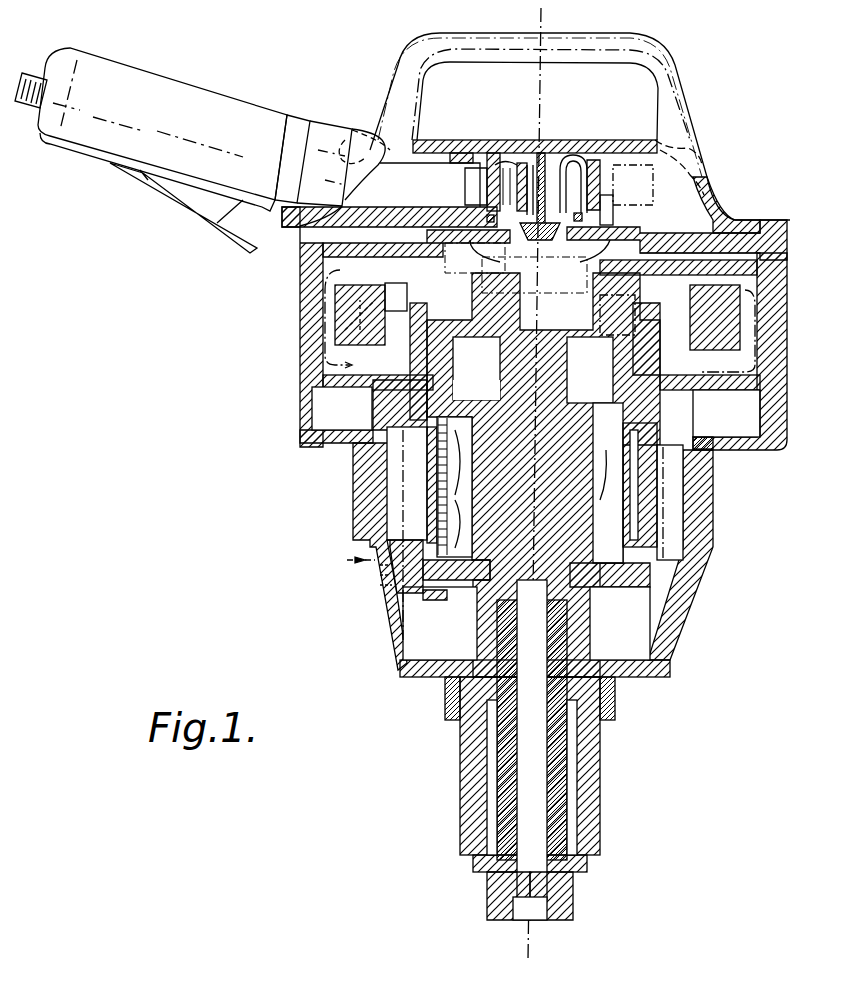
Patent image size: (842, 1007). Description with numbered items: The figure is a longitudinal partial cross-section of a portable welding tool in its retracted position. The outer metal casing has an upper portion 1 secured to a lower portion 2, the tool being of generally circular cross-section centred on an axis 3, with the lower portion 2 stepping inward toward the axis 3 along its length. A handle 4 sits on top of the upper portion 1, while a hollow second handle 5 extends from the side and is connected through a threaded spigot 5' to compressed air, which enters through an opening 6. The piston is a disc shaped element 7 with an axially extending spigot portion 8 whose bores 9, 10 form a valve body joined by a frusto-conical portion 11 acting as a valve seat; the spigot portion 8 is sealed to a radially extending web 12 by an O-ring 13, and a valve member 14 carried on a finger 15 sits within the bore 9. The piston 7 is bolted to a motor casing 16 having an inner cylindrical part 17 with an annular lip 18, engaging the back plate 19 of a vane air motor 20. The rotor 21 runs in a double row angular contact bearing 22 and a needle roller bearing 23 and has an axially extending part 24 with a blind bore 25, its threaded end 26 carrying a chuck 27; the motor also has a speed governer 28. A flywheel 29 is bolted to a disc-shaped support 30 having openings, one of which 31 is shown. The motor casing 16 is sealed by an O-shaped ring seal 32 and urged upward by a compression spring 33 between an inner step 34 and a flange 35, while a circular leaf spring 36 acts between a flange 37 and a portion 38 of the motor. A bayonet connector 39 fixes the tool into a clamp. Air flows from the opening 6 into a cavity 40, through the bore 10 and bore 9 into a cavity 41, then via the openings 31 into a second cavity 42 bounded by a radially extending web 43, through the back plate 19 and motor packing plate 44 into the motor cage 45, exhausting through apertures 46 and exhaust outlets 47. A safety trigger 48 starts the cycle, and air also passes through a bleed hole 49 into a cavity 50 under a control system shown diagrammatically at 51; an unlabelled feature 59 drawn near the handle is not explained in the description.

The upper portion of casing 1 is at (706, 204).
The lower portion of casing 2 is at (772, 438).
The axis 3 is at (532, 718).
The handle 4 is at (672, 80).
The second handle 5 is at (195, 122).
The threaded spigot 5' is at (31, 66).
The opening 6 is at (345, 150).
The disc shaped element 7 is at (375, 236).
The spigot portion 8 is at (577, 152).
The bore 9 is at (590, 228).
The bore 10 is at (548, 170).
The frusto-conical portion 11 is at (498, 168).
The radially extending web 12 is at (400, 183).
The O-ring 13 is at (484, 210).
The valve member 14 is at (523, 290).
The finger 15 is at (540, 168).
The motor casing 16 is at (757, 385).
The inner cylindrical part 17 is at (662, 340).
The annular lip 18 is at (647, 318).
The back plate 19 is at (452, 366).
The vane air motor 20 is at (662, 198).
The rotor 21 is at (420, 495).
The double row angular contact bearing 22 is at (601, 388).
The needle roller bearing 23 is at (482, 812).
The axially extending part 24 is at (555, 762).
The blind bore 25 is at (542, 786).
The end 26 is at (560, 922).
The chuck 27 is at (500, 922).
The speed governer 28 is at (503, 348).
The flywheel 29 is at (362, 333).
The disc-shaped support 30 is at (365, 312).
The opening 31 is at (432, 284).
The O-shaped ring seal 32 is at (705, 446).
The compression spring 33 is at (688, 506).
The inner step 34 is at (672, 600).
The flange 35 is at (692, 434).
The circular leaf spring 36 is at (440, 598).
The flange 37 is at (626, 606).
The portion of the motor 38 is at (462, 632).
The bayonet connector 39 is at (446, 690).
The cavity 40 is at (433, 191).
The cavity 41 is at (475, 268).
The second cavity 42 is at (459, 306).
The radially extending web 43 is at (342, 408).
The motor packing plate 44 is at (468, 398).
The motor cage 45 is at (640, 518).
The apertures 46 is at (450, 452).
The exhaust outlets 47 is at (380, 590).
The safety trigger 48 is at (226, 240).
The bleed hole 49 is at (604, 165).
The cavity 50 is at (683, 239).
The control system 51 is at (643, 193).
The cover 59 is at (650, 140).